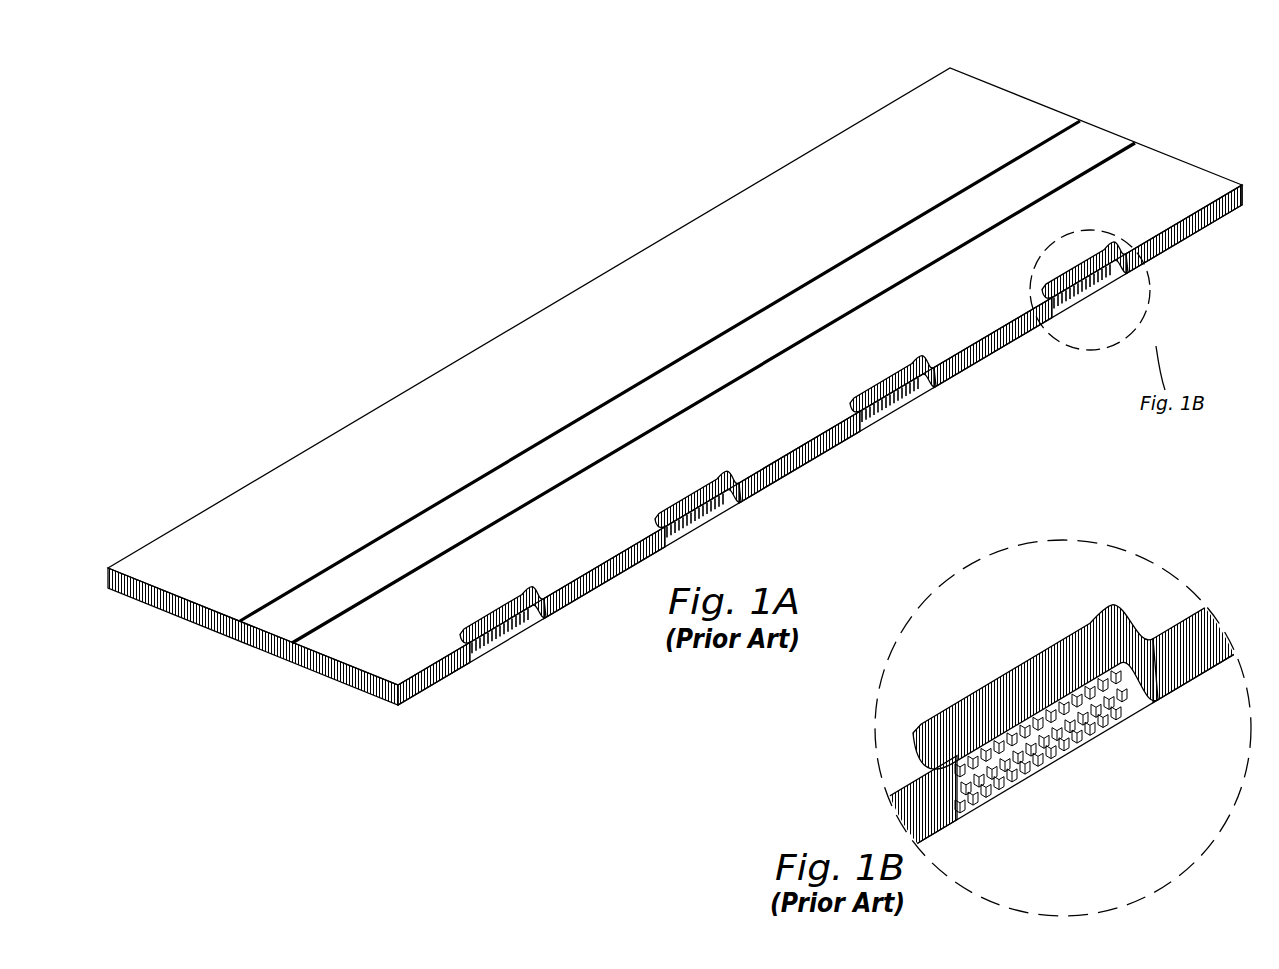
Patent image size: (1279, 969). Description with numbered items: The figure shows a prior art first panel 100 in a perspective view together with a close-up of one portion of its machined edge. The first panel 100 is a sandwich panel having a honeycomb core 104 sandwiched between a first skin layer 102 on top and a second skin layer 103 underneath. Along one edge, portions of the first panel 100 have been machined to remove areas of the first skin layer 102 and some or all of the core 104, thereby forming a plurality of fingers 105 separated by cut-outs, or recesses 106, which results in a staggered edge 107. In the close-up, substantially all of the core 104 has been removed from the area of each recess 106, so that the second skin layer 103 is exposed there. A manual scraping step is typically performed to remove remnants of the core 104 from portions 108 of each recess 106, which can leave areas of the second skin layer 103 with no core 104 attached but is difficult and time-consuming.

In FIG. 1A, the first panel 100 is at (435, 214).
In FIG. 1A, the first skin layer 102 is at (625, 353).
In FIG. 1B, the first skin layer 102 is at (1092, 606).
In FIG. 1A, the second skin layer 103 is at (318, 440).
In FIG. 1B, the second skin layer 103 is at (1170, 693).
In FIG. 1A, the honeycomb core 104 is at (512, 620).
In FIG. 1B, the honeycomb core 104 is at (1027, 700).
In FIG. 1A, the fingers 105 is at (1180, 252).
In FIG. 1B, the fingers 105 is at (1175, 612).
In FIG. 1A, the recesses 106 is at (905, 397).
In FIG. 1B, the recesses 106 is at (1027, 747).
In FIG. 1A, the staggered edge 107 is at (390, 708).
In FIG. 1B, the portions of each recess 108 is at (1087, 730).